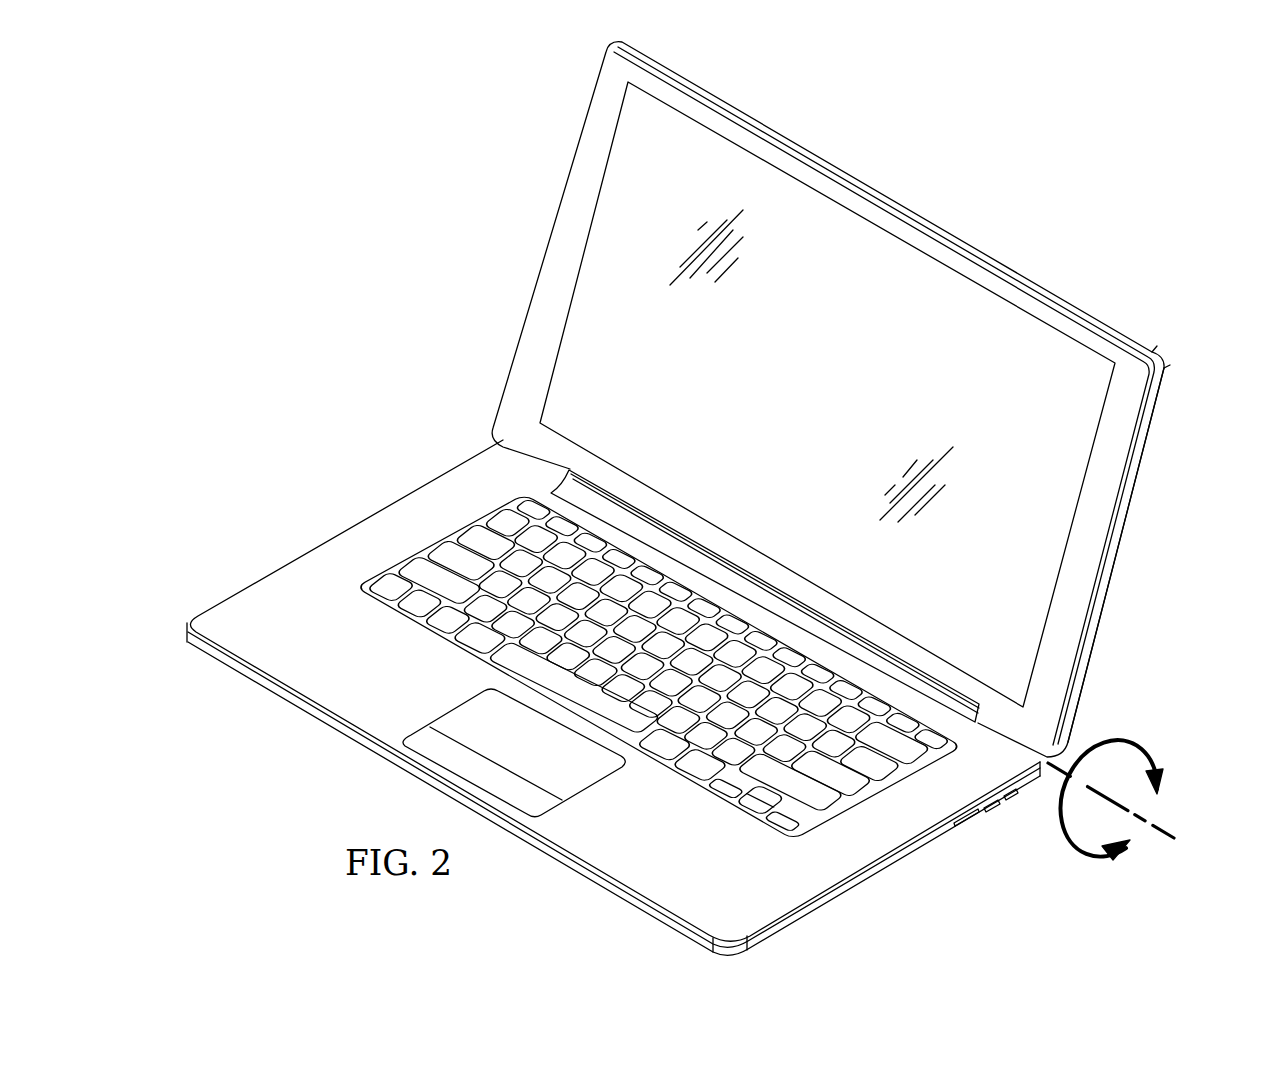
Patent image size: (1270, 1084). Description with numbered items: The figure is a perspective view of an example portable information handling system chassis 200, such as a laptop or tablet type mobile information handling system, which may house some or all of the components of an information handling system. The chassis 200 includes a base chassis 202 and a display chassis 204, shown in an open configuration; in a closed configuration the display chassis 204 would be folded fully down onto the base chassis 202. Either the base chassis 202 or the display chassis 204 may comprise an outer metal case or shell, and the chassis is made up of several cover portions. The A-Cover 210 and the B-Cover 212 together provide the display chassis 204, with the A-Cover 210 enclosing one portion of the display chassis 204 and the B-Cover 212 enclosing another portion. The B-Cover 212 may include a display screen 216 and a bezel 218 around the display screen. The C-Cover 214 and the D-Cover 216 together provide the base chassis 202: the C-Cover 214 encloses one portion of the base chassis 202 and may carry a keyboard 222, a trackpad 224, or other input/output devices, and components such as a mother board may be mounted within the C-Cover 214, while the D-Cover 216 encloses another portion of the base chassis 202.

The portable information handling system chassis 200 is at (1100, 193).
The base chassis 202 is at (527, 308).
The display chassis 204 is at (1138, 577).
The A-Cover 210 is at (1133, 487).
The B-Cover 212 is at (1087, 333).
The C-Cover 214 is at (262, 600).
The D-Cover 216 is at (907, 272).
The bezel 218 is at (753, 120).
The keyboard 222 is at (483, 522).
The trackpad 224 is at (575, 784).